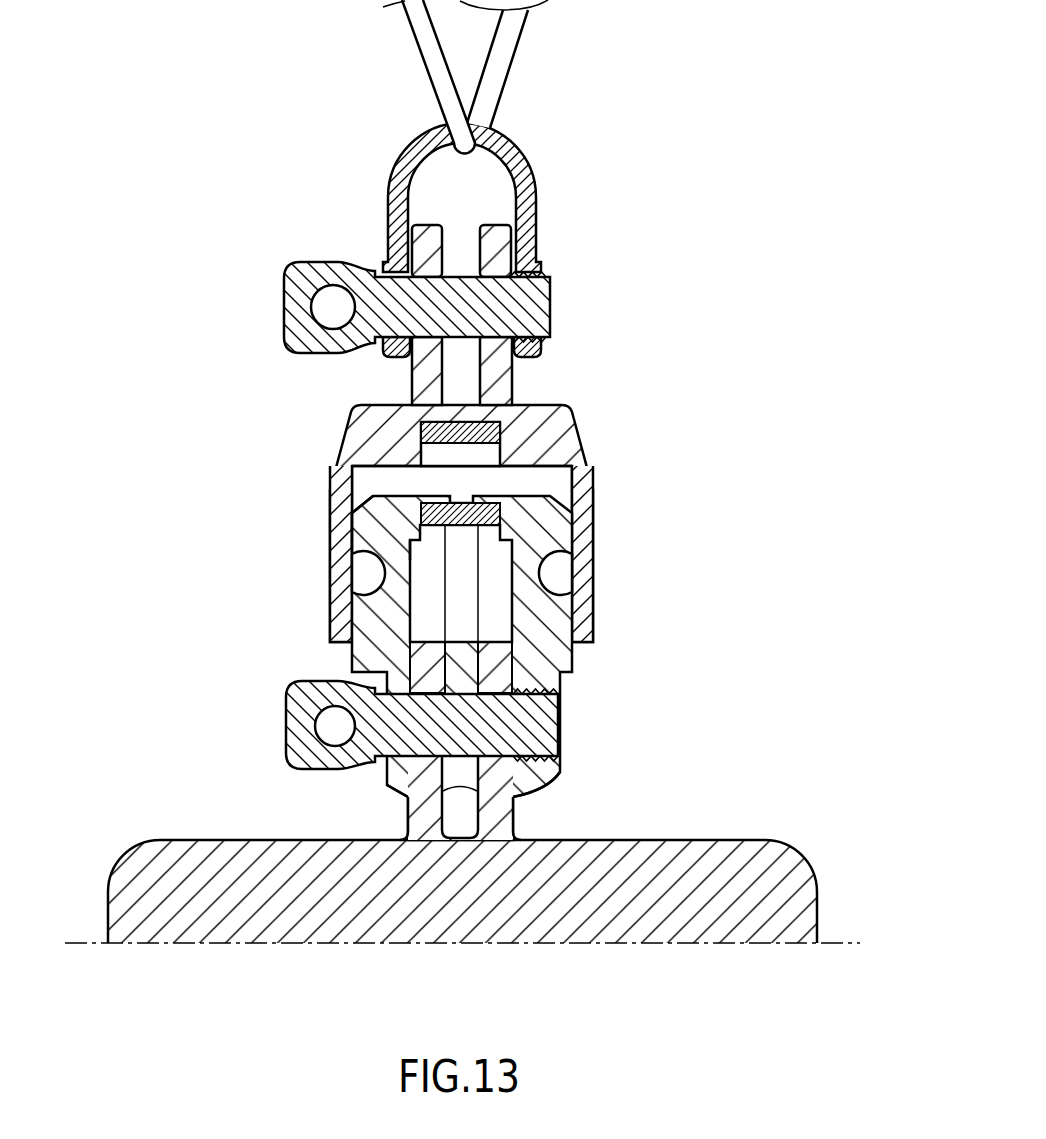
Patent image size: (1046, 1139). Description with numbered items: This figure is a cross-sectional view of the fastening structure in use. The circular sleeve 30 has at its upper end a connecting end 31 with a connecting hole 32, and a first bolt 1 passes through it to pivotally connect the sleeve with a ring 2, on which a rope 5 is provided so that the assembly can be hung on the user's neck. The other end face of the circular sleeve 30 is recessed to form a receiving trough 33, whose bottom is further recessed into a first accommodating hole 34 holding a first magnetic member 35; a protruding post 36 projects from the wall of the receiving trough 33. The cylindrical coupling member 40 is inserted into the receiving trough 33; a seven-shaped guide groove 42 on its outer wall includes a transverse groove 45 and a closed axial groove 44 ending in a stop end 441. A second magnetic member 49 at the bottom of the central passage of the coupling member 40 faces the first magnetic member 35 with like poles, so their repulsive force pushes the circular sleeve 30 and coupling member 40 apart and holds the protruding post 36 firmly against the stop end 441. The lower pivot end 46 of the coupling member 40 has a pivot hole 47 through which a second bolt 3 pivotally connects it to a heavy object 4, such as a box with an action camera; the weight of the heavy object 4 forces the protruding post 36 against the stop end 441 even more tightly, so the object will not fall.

The first bolt 1 is at (392, 265).
The ring 2 is at (405, 160).
The second bolt 3 is at (310, 718).
The heavy object 4 is at (160, 875).
The rope 5 is at (490, 78).
The circular sleeve 30 is at (600, 520).
The connecting end 31 is at (518, 385).
The connecting hole 32 is at (407, 250).
The receiving trough 33 is at (562, 478).
The first accommodating hole 34 is at (440, 455).
The first magnetic member 35 is at (540, 440).
The protruding post 36 is at (370, 553).
The coupling member 40 is at (573, 663).
The guide groove 42 is at (368, 583).
The closed axial groove 44 is at (383, 540).
The stop end 441 is at (375, 515).
The transverse groove 45 is at (555, 573).
The pivot end 46 is at (545, 787).
The pivot hole 47 is at (375, 786).
The second magnetic member 49 is at (495, 513).